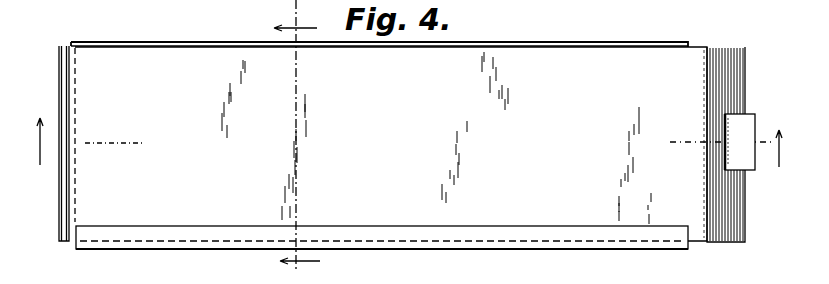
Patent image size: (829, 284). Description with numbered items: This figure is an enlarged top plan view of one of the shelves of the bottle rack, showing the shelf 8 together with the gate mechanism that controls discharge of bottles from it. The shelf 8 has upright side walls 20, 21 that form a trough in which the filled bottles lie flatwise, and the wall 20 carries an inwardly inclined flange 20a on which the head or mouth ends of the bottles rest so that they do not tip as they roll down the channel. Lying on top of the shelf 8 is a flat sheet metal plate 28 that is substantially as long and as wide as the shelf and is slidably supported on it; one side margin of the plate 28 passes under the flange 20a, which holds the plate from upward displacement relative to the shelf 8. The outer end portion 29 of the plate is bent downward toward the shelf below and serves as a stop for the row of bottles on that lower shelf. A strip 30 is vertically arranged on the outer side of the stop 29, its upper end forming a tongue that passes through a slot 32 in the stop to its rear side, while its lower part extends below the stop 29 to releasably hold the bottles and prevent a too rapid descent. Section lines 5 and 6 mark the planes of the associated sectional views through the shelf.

The section line 5- 5 is at (409, 142).
The section line 6- 6 is at (297, 142).
The shelf 8 is at (564, 38).
The side wall 20 is at (493, 247).
The inwardly inclined flange 20a is at (484, 231).
The side wall 21 is at (525, 38).
The flat sheet metal plate 28 is at (583, 283).
The outer end portion 29 is at (744, 211).
The strip 30 is at (745, 125).
The slot 32 is at (728, 113).